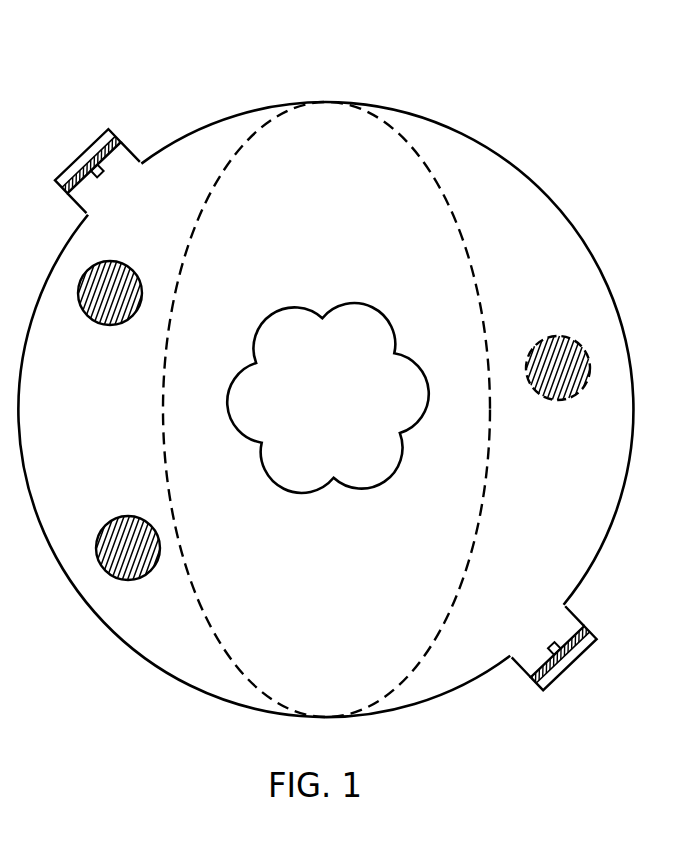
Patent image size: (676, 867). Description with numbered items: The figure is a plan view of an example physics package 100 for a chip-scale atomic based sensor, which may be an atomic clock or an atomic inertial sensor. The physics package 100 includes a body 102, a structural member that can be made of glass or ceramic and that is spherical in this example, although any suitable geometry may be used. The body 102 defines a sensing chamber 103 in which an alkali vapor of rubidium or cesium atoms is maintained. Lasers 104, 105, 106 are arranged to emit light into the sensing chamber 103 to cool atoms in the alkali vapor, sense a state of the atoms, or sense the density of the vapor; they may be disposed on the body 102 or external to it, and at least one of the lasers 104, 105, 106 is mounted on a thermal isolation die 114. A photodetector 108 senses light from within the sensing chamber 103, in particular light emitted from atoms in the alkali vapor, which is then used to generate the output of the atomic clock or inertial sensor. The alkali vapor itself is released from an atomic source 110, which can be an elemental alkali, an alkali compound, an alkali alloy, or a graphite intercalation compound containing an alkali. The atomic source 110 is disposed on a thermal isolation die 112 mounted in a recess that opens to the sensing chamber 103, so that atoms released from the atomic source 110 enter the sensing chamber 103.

The physics package 100 is at (598, 68).
The body 102 is at (443, 124).
The sensing chamber 103 is at (487, 197).
The laser 104 is at (547, 643).
The laser 105 is at (558, 335).
The laser 106 is at (103, 326).
The photodetector 108 is at (120, 517).
The atomic source 110 is at (106, 177).
The thermal isolation die 112 is at (118, 140).
The thermal isolation die 114 is at (583, 630).